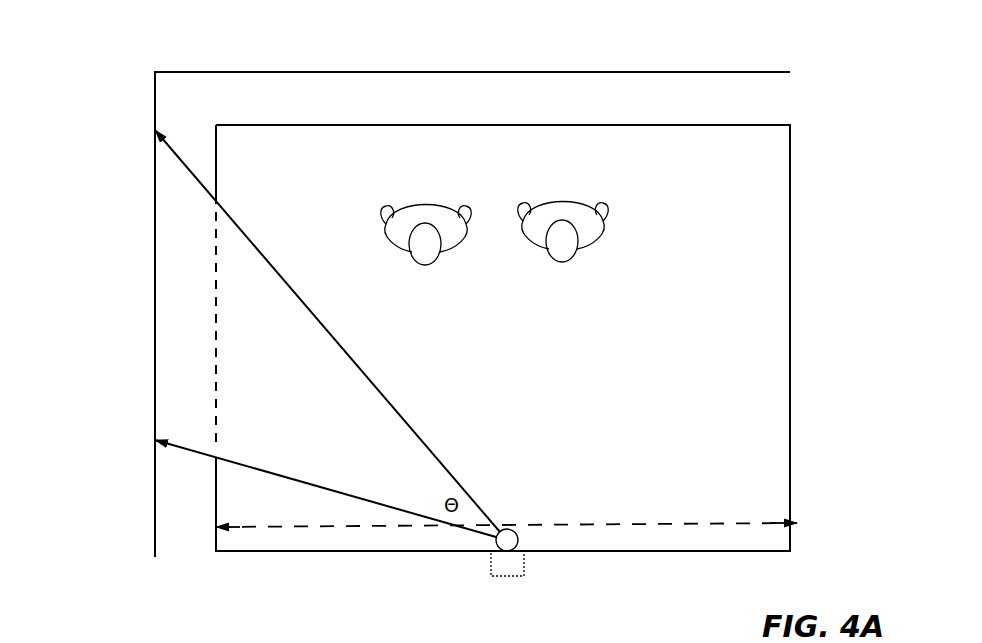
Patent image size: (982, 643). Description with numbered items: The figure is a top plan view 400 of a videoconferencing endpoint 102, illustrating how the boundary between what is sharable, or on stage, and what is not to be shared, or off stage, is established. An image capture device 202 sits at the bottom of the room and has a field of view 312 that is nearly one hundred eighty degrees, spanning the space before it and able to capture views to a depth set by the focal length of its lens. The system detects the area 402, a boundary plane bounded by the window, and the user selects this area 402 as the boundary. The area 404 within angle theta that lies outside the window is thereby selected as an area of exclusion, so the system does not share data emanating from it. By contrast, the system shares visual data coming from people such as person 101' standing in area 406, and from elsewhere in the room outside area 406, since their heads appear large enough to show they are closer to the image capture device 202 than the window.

The top plan view 400 is at (264, 44).
The videoconferencing endpoint 102 is at (664, 62).
The area 402 is at (214, 290).
The area 404 is at (207, 237).
The area 406 is at (297, 364).
The person 101' is at (438, 208).
The image capture device 202 is at (511, 589).
The field of view 312 is at (714, 523).